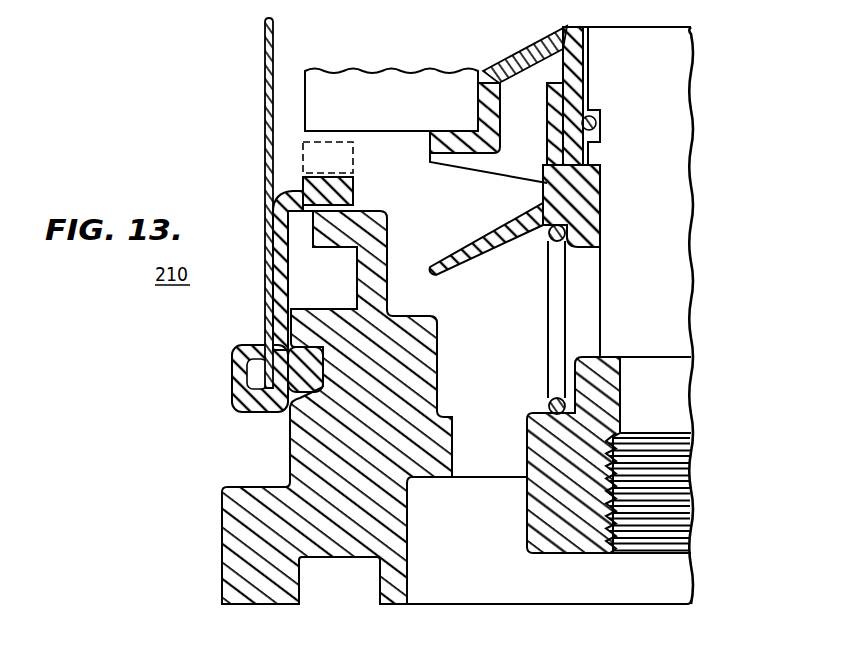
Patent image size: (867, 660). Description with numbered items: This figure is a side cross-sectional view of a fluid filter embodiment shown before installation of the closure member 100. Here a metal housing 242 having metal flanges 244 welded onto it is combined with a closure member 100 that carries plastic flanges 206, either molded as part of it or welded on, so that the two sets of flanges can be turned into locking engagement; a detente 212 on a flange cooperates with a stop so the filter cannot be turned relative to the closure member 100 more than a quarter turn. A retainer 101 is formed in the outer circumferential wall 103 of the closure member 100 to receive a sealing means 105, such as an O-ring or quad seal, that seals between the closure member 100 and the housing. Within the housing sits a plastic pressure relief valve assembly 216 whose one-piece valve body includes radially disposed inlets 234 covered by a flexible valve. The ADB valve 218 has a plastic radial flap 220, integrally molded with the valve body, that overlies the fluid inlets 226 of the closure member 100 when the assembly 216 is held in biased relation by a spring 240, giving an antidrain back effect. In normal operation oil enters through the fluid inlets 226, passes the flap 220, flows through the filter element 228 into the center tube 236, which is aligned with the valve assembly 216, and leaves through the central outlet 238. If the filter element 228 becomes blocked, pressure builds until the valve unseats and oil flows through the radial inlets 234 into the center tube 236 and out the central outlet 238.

The closure member 100 is at (230, 533).
The retainer 101 is at (293, 413).
The outer circumferential wall 103 is at (288, 453).
The sealing means 105 is at (270, 352).
The flanges 206 is at (353, 157).
The detente 212 is at (352, 190).
The pressure relief valve assembly 216 is at (601, 93).
The ADB valve 218 is at (610, 208).
The radial flap 220 is at (480, 250).
The fluid inlets 226 is at (502, 468).
The filter element 228 is at (410, 78).
The radially disposed inlets 234 is at (520, 174).
The center tube 236 is at (602, 297).
The central outlet 238 is at (673, 553).
The spring 240 is at (548, 403).
The metal housing 242 is at (268, 138).
The metal flanges 244 is at (286, 287).